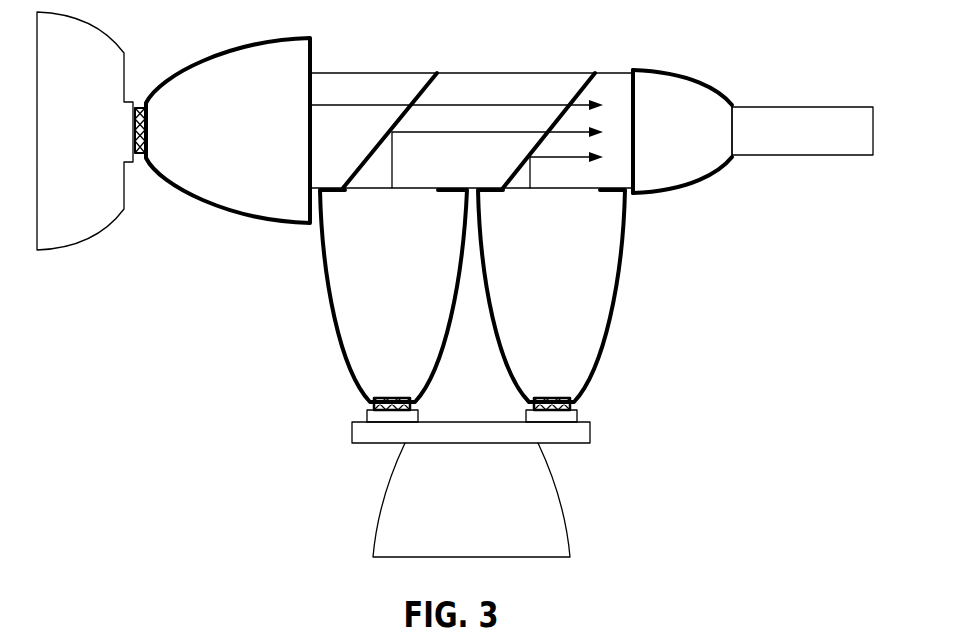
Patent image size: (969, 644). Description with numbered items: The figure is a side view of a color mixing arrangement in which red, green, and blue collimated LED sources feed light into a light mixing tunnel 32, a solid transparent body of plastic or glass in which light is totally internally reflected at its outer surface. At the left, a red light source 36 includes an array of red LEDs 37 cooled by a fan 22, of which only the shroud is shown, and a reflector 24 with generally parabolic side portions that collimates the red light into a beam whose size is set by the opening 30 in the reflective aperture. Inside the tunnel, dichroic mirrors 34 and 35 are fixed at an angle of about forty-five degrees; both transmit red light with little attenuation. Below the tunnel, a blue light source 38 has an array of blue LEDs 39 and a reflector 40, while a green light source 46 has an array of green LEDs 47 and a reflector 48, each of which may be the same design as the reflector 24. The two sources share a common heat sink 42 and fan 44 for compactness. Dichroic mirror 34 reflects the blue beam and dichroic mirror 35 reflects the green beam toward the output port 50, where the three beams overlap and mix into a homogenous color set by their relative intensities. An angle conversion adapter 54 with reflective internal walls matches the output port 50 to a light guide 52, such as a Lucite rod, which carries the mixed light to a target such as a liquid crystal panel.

The fan 22 is at (88, 121).
The array of red LEDs 37 is at (147, 131).
The reflector 24 is at (270, 223).
The opening 30 is at (295, 135).
The red light source 36 is at (204, 252).
The light mixing tunnel 32 is at (487, 55).
The dichroic mirror 34 is at (423, 90).
The dichroic mirror 35 is at (588, 82).
The output port 50 is at (636, 108).
The angle conversion adapter 54 is at (693, 181).
The light guide 52 is at (790, 157).
The reflector 40 is at (329, 308).
The blue light source 38 is at (311, 334).
The array of blue LEDs 39 is at (392, 398).
The reflector 48 is at (618, 291).
The array of green LEDs 47 is at (552, 398).
The green light source 46 is at (686, 320).
The heat sink 42 is at (357, 440).
The fan 44 is at (483, 509).